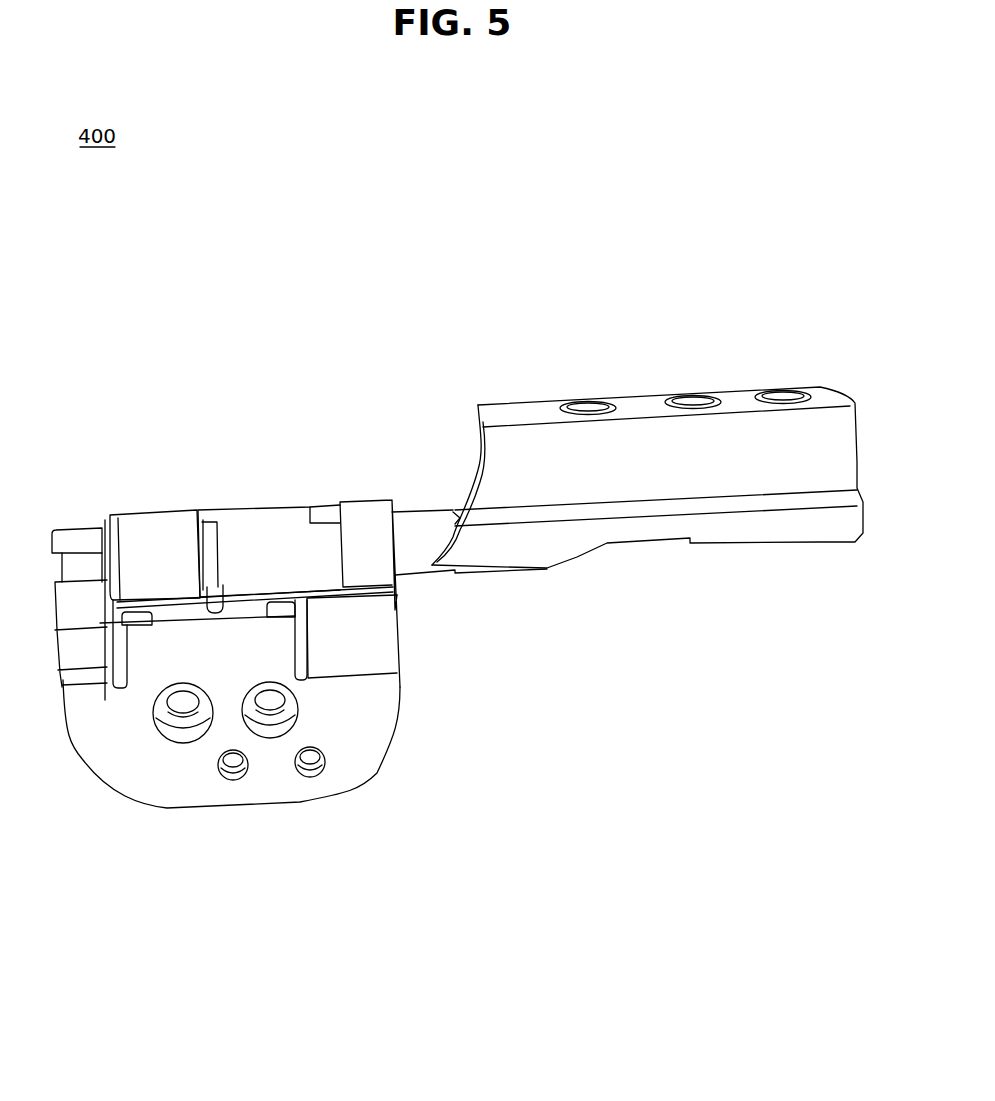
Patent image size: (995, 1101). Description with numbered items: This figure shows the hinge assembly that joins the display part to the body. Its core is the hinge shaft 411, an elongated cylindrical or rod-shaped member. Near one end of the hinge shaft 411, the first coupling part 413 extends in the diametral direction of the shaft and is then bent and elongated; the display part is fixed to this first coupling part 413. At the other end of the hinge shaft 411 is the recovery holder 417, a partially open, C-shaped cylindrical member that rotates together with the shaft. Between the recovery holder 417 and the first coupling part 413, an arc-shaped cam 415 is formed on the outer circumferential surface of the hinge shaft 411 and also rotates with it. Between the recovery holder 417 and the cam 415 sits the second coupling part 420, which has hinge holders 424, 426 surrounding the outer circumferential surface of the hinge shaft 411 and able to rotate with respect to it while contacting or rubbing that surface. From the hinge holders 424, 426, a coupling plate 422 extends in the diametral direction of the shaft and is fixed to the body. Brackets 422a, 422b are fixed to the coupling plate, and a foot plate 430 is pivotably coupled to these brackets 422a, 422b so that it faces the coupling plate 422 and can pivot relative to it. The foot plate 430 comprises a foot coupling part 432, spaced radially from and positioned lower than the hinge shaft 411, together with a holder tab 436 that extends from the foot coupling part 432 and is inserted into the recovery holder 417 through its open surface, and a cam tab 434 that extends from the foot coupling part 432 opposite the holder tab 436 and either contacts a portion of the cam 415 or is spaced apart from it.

The hinge shaft 411 is at (420, 523).
The first coupling part 413 is at (520, 413).
The cam 415 is at (366, 530).
The recovery holder 417 is at (72, 535).
The second coupling part 420 is at (230, 464).
The coupling plate 422 is at (177, 610).
The bracket 422a is at (303, 633).
The bracket 422b is at (117, 648).
The hinge holder 424 is at (140, 537).
The hinge holder 426 is at (252, 528).
The foot plate 430 is at (227, 769).
The foot coupling part 432 is at (187, 757).
The cam tab 434 is at (357, 687).
The holder tab 436 is at (77, 615).